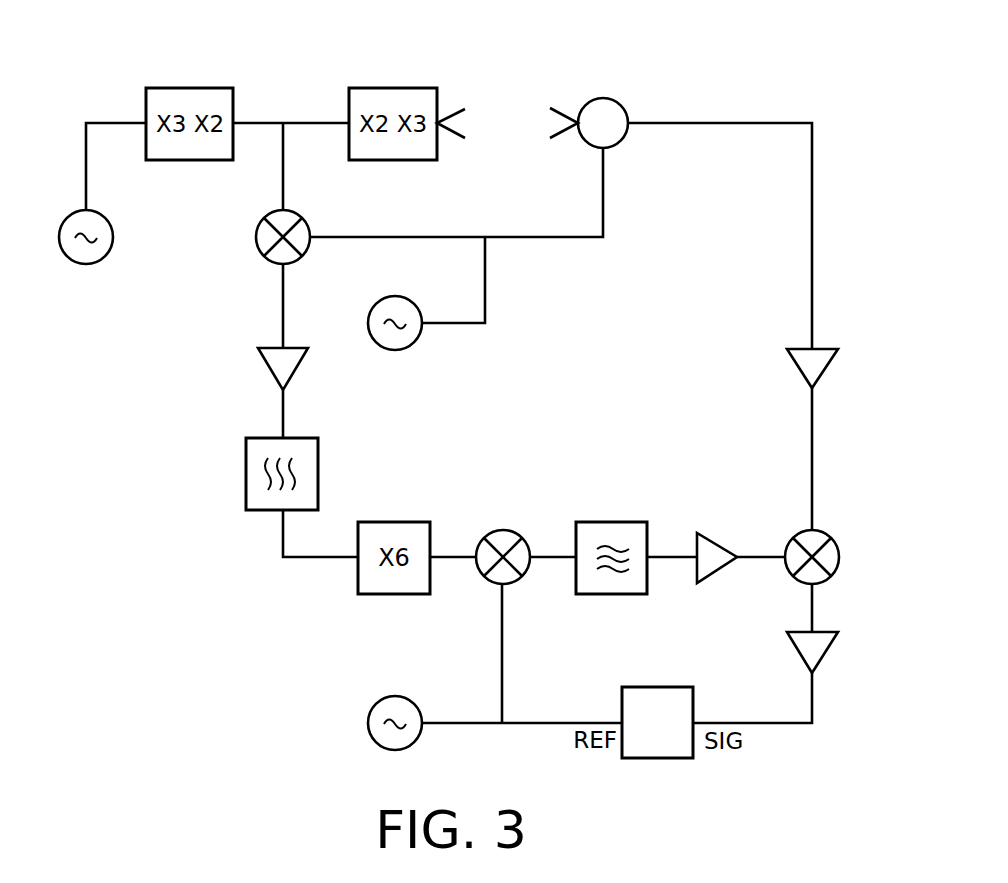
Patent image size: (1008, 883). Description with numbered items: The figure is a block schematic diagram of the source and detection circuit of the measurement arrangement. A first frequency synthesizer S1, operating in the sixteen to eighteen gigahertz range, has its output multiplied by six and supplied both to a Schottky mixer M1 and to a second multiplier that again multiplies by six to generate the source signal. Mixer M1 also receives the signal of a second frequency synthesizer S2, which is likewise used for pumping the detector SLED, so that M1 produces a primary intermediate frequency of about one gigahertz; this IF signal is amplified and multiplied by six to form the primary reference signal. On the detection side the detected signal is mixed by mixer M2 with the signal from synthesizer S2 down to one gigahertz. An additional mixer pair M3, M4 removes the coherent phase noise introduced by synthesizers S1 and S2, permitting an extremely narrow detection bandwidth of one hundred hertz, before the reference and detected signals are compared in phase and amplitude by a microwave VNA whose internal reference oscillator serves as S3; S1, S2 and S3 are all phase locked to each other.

The first frequency synthesizer S1 is at (86, 264).
The second frequency synthesizer S2 is at (395, 350).
The internal VNA reference oscillator S3 is at (395, 696).
The Schottky mixer M1 is at (262, 256).
The mixer M2 is at (606, 98).
The mixer of additional mixer pair M3 is at (503, 530).
The mixer of additional mixer pair M4 is at (825, 537).